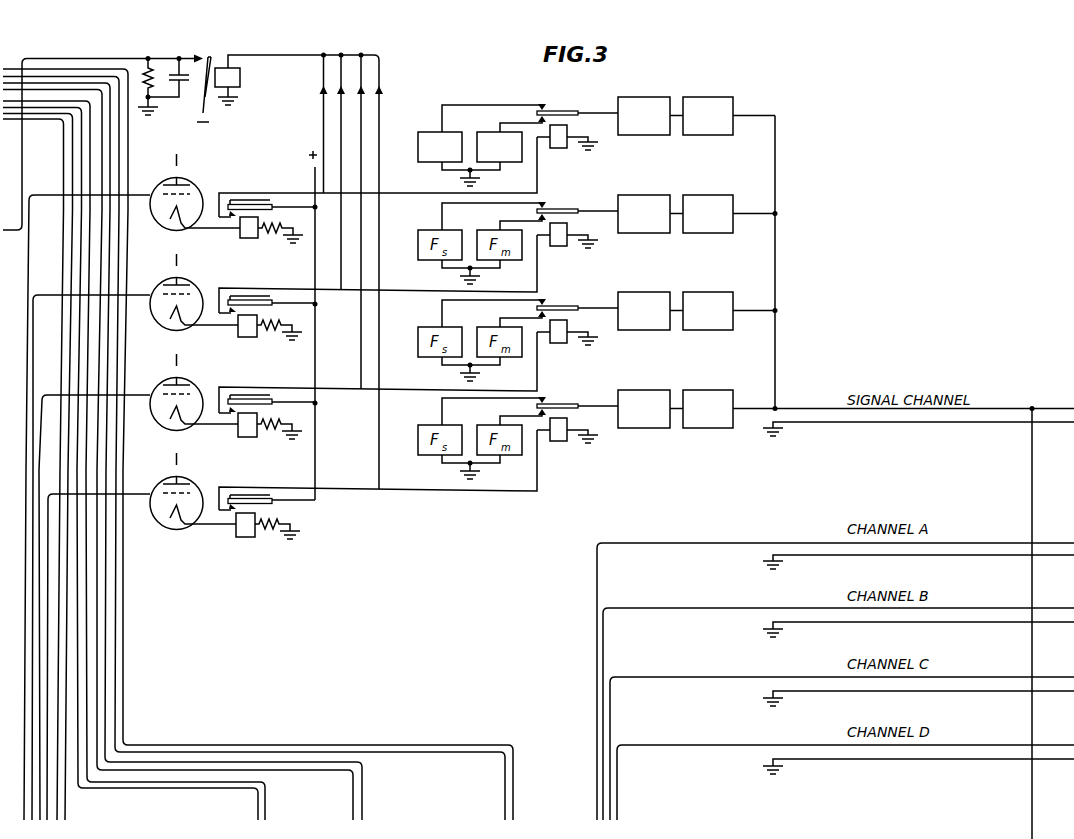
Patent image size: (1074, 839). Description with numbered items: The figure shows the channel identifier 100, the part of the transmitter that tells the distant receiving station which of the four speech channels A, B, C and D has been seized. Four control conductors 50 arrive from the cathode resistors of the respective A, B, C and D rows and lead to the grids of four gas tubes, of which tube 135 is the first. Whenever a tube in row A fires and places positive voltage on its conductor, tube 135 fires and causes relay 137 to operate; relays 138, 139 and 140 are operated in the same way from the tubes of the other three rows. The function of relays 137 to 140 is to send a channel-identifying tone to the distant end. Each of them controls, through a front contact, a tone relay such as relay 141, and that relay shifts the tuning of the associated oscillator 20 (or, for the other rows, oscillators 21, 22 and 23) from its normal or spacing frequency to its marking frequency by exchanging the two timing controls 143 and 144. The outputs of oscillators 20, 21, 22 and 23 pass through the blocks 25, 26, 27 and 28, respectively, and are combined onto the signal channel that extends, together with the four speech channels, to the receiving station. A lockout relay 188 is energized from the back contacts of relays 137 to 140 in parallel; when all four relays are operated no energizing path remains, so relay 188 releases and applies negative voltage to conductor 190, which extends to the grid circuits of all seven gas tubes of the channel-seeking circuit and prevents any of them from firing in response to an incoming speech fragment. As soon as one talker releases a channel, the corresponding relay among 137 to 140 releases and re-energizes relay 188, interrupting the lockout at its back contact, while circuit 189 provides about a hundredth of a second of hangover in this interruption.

The oscillator 20 is at (640, 135).
The oscillator 21 is at (640, 233).
The oscillator 22 is at (638, 330).
The oscillator 23 is at (635, 428).
The filter 25 is at (703, 135).
The filter 26 is at (703, 233).
The filter 27 is at (703, 330).
The filter 28 is at (701, 428).
The control conductors 50 is at (133, 498).
The channel identifier 100 is at (331, 297).
The tube 135 is at (196, 178).
The relay 137 is at (246, 239).
The relay 138 is at (245, 338).
The relay 139 is at (244, 438).
The relay 140 is at (243, 538).
The relay 141 is at (553, 148).
The timing control 143 is at (432, 128).
The timing control 144 is at (517, 163).
The lockout relay 188 is at (242, 75).
The circuit 189 is at (162, 77).
The conductor 190 is at (121, 57).